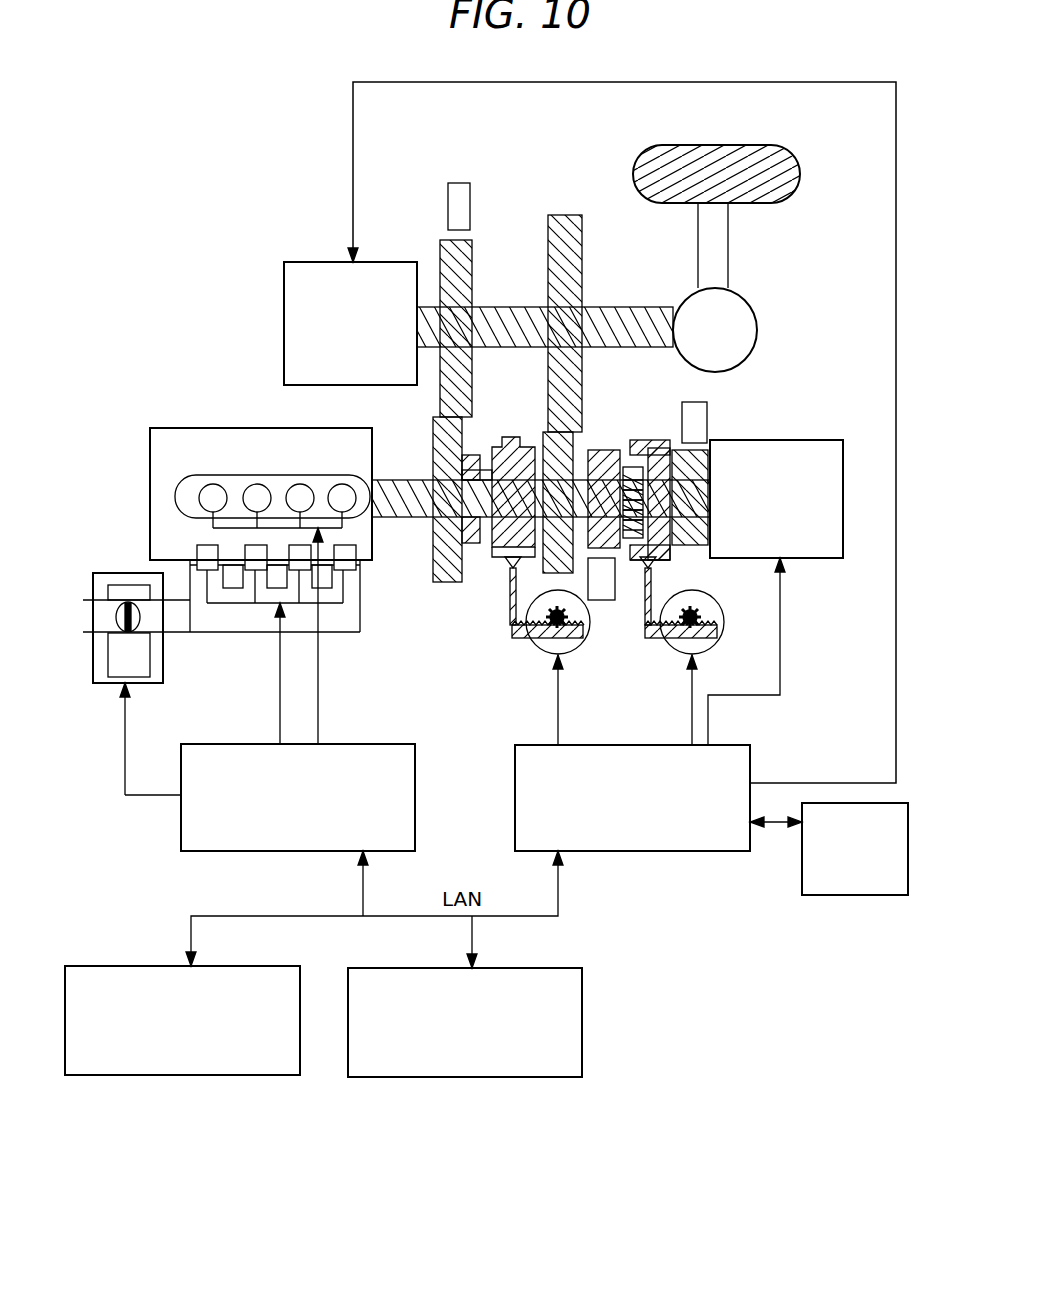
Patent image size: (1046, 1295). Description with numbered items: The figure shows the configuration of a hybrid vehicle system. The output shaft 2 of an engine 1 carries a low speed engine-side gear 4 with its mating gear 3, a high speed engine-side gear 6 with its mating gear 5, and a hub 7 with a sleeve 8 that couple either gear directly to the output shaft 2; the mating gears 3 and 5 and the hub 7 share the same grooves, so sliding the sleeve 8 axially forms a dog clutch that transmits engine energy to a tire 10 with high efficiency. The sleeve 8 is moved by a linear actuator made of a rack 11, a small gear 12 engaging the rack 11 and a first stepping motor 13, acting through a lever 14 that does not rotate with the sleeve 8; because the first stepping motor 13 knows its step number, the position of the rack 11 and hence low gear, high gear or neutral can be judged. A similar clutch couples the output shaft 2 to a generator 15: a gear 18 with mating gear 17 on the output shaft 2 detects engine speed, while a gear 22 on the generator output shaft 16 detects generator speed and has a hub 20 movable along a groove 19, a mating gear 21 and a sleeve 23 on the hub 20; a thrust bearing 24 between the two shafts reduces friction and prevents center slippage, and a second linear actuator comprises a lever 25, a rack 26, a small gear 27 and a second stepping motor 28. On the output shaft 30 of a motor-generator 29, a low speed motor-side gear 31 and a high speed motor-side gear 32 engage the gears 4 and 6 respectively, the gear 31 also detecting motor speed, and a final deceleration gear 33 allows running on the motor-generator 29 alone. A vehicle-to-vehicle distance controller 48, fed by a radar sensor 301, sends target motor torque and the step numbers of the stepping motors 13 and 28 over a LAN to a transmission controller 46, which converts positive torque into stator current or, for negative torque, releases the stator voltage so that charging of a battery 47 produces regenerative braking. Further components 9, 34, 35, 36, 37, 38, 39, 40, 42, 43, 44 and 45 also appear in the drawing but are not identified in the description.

The engine 1 is at (185, 428).
The output shaft 2 is at (395, 480).
The mating gear 3 is at (470, 543).
The low speed engine-side gear 4 is at (433, 582).
The mating gear 5 is at (548, 437).
The high speed engine-side gear 6 is at (600, 450).
The hub 7 is at (496, 437).
The sleeve 8 is at (508, 437).
The hub 9 is at (440, 478).
The tire 10 is at (735, 145).
The rack 11 is at (513, 640).
The small gear 12 is at (590, 640).
The stepping motor (1) 13 is at (563, 645).
The lever 14 is at (510, 605).
The generator 15 is at (805, 440).
The output shaft 16 is at (712, 445).
The mating gear 17 is at (636, 467).
The gear 18 is at (633, 467).
The groove 19 is at (660, 440).
The hub 20 is at (670, 548).
The mating gear 21 is at (700, 545).
The gear 22 is at (705, 540).
The sleeve 23 is at (645, 467).
The thrust bearing 24 is at (612, 588).
The lever 25 is at (652, 605).
The rack 26 is at (648, 640).
The small gear 27 is at (712, 622).
The stepping motor (2) 28 is at (700, 645).
The motor-generator 29 is at (284, 336).
The output shaft 30 is at (622, 307).
The low speed motor-side gear 31 is at (472, 262).
The high speed motor-side gear 32 is at (568, 215).
The final deceleration gear 33 is at (757, 330).
The fuel injection system 34 is at (237, 632).
The throttle unit 35 is at (93, 573).
The throttle valve 36 is at (116, 617).
The throttle actuator 37 is at (150, 655).
The throttle sensor 38 is at (129, 572).
The ignition coil 39 is at (197, 548).
The cylinder 40 is at (215, 488).
The rotation sensor 42 is at (470, 190).
The position sensor 43 is at (605, 600).
The rotation sensor 44 is at (707, 410).
The engine controller 45 is at (237, 851).
The transmission controller 46 is at (713, 851).
The battery 47 is at (883, 895).
The vehicle-to-vehicle distance controller 48 is at (395, 1077).
The radar sensor 301 is at (125, 1075).